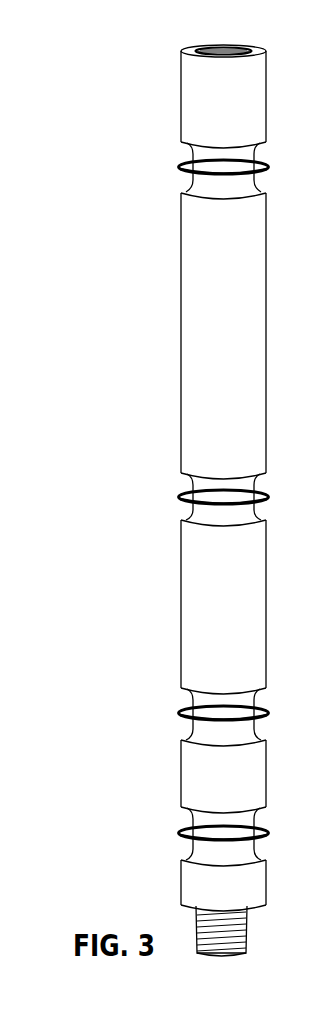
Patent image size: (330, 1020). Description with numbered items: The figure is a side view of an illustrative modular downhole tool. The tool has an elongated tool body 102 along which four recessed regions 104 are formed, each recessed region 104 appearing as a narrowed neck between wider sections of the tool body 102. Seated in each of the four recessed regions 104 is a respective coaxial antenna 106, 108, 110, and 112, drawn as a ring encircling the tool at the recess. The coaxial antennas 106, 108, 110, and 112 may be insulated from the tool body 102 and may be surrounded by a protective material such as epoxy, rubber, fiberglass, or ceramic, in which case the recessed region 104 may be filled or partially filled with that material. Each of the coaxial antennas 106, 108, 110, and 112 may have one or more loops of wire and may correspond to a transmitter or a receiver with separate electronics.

The tool body 102 is at (180, 128).
The recessed region 104 is at (183, 182).
The coaxial antenna 106 is at (180, 165).
The coaxial antenna 108 is at (180, 497).
The coaxial antenna 110 is at (180, 713).
The coaxial antenna 112 is at (180, 833).